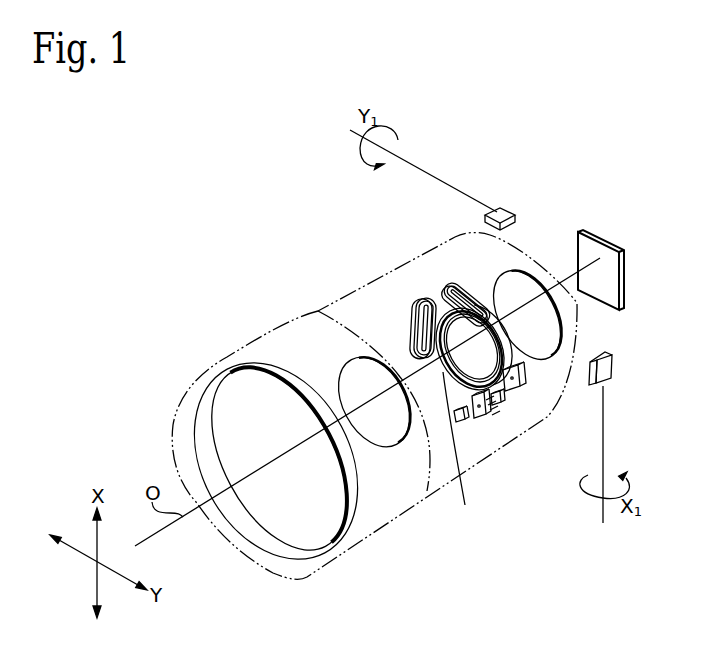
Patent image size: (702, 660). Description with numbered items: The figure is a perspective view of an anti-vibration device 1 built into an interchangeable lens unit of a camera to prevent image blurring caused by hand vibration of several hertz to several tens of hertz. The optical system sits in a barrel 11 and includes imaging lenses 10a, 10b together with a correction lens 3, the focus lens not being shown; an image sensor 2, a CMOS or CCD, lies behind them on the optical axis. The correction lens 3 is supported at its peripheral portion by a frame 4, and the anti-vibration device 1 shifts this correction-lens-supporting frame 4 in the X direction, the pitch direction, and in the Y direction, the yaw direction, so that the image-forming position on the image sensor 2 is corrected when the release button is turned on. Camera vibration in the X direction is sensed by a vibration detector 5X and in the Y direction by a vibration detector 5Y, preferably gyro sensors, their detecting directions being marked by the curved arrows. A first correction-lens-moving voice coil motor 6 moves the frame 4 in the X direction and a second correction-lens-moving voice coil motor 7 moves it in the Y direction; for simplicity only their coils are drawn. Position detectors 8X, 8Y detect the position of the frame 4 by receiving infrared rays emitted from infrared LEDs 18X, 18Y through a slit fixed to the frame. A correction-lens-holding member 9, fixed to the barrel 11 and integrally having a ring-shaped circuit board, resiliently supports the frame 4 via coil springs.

The anti-vibration device 1 is at (549, 221).
The image sensor 2 is at (606, 251).
The correction lens 3 is at (473, 367).
The correction-lens-supporting frame 4 is at (469, 410).
The vibration detector 5X is at (613, 357).
The vibration detector 5Y is at (500, 212).
The first correction-lens-moving voice coil motor 6 is at (450, 286).
The second correction-lens-moving voice coil motor 7 is at (415, 330).
The position detector 8X is at (482, 413).
The position detector 8Y is at (523, 377).
The correction-lens-holding member 9 is at (400, 283).
The imaging lens 10a is at (385, 425).
The imaging lens 10b is at (523, 290).
The barrel 11 is at (262, 345).
The infrared LED 18X is at (461, 422).
The infrared LED 18Y is at (503, 399).